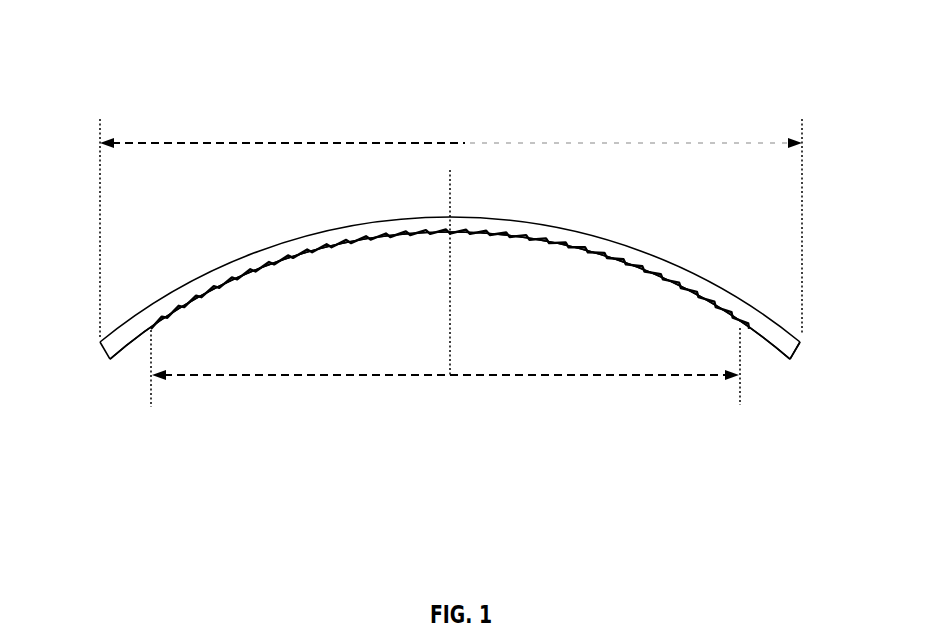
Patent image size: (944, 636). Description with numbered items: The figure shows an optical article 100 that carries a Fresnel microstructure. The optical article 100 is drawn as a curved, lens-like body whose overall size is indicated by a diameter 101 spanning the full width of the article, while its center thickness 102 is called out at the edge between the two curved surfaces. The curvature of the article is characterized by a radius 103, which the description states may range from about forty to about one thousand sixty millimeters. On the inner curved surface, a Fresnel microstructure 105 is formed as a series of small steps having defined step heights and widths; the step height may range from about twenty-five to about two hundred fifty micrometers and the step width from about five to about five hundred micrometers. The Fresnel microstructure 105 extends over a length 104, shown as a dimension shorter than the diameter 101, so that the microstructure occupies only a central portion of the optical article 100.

The optical article 100 is at (421, 181).
The diameter 101 is at (451, 221).
The center thickness 102 is at (760, 405).
The radius 103 is at (289, 300).
The length 104 is at (445, 299).
The Fresnel microstructure 105 is at (392, 248).